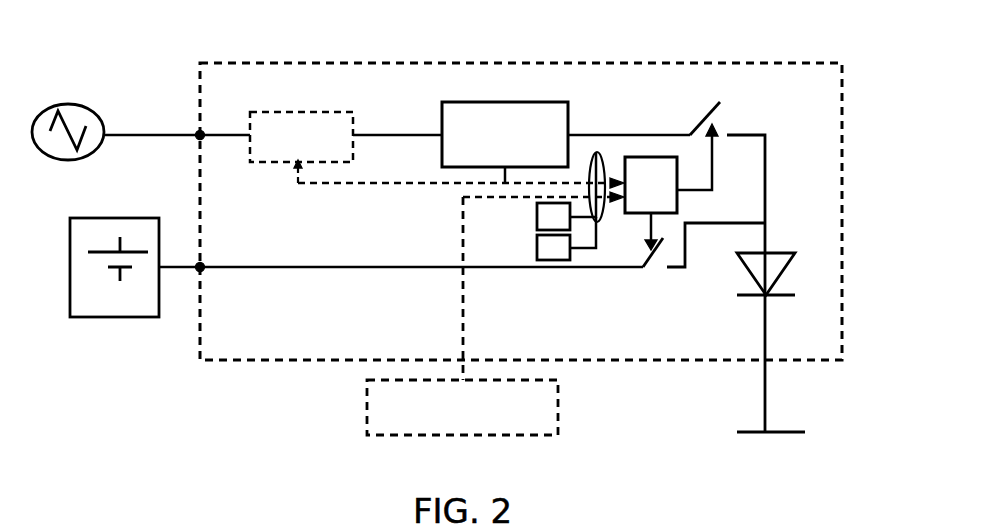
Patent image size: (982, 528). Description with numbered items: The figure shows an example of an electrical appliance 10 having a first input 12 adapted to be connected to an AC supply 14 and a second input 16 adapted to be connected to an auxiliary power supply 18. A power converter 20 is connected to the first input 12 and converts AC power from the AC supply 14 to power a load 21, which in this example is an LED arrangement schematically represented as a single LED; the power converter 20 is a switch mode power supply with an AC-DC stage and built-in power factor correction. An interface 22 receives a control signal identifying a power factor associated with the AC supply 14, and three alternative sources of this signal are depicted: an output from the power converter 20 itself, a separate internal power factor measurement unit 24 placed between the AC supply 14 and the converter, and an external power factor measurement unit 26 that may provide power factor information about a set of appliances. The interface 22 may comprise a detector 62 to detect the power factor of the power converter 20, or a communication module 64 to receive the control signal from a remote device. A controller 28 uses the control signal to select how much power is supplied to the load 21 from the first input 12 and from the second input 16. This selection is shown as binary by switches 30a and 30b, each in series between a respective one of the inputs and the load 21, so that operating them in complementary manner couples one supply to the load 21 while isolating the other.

The electrical appliance 10 is at (842, 98).
The first input 12 is at (200, 132).
The AC supply 14 is at (76, 103).
The second input 16 is at (198, 270).
The auxiliary power supply 18 is at (114, 317).
The power converter 20 is at (497, 102).
The load 21 is at (795, 253).
The interface 22 is at (595, 152).
The internal power factor measurement unit 24 is at (303, 112).
The external power factor measurement unit 26 is at (367, 425).
The controller 28 is at (637, 157).
The switch 30a is at (697, 125).
The switch 30b is at (650, 266).
The detector 62 is at (537, 211).
The communication module 64 is at (537, 243).